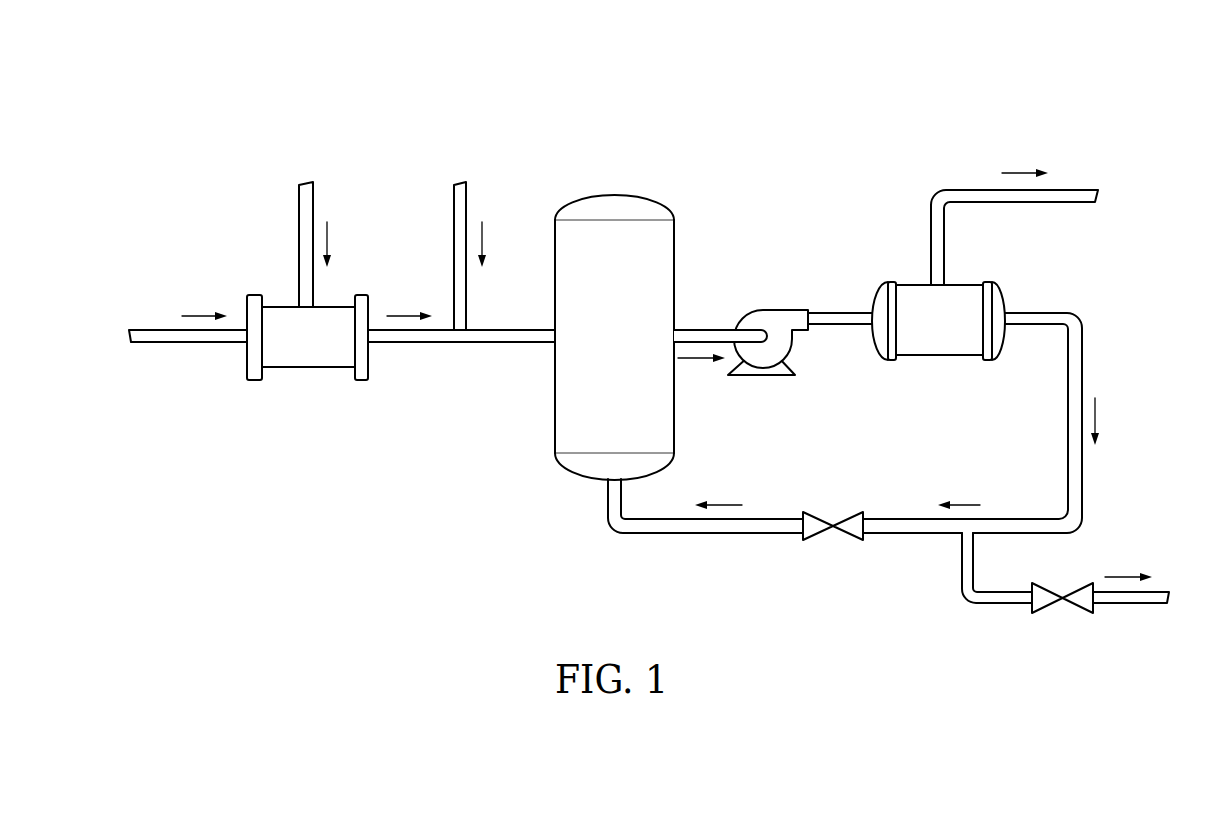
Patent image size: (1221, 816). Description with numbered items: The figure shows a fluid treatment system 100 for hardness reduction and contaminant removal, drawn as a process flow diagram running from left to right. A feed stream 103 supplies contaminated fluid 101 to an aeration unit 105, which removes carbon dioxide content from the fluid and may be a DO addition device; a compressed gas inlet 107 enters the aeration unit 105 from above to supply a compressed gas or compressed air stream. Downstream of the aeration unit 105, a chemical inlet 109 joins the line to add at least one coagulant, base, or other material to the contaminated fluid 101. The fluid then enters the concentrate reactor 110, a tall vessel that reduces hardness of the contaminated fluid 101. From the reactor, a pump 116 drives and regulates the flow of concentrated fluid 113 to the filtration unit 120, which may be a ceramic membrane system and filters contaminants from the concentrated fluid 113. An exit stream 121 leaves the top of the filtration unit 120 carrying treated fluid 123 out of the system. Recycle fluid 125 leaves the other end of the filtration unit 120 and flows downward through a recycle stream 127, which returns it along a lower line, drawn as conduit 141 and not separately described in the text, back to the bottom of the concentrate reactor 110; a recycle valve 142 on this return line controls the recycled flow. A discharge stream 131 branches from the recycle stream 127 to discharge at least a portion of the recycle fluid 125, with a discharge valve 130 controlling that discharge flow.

The fluid treatment system 100 is at (158, 121).
The contaminated fluid 101 is at (158, 333).
The feed stream 103 is at (207, 345).
The aeration unit 105 is at (305, 368).
The compressed gas inlet 107 is at (298, 245).
The chemical inlet 109 is at (453, 245).
The concentrate reactor 110 is at (575, 203).
The concentrated fluid 113 is at (702, 328).
The pump 116 is at (773, 307).
The filtration unit 120 is at (962, 283).
The exit stream 121 is at (1028, 205).
The treated fluid 123 is at (1073, 190).
The recycle fluid 125 is at (1075, 480).
The recycle stream 127 is at (1082, 380).
The discharge valve 130 is at (1050, 612).
The discharge stream 131 is at (1130, 605).
The return conduit 141 is at (718, 535).
The recycle valve 142 is at (822, 542).